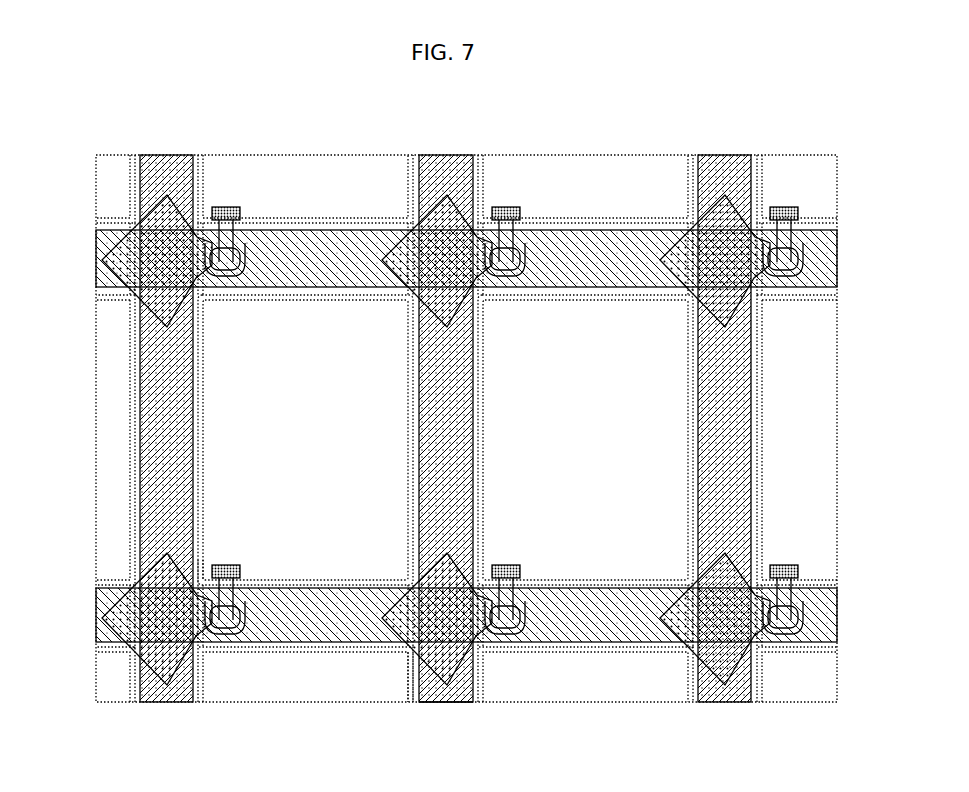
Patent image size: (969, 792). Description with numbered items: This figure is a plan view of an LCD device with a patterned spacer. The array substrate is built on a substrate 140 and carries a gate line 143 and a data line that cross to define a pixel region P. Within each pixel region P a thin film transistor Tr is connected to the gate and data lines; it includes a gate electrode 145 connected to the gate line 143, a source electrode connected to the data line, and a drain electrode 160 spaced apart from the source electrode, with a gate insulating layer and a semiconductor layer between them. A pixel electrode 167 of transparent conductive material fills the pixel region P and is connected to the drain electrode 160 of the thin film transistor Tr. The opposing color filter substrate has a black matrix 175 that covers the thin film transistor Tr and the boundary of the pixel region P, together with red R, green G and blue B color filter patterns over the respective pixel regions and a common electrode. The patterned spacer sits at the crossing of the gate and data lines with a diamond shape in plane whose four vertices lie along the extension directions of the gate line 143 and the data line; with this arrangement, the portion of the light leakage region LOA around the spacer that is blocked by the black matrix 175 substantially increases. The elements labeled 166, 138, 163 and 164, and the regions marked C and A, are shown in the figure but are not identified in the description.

The substrate 140 is at (378, 150).
The pixel region P is at (282, 316).
The red color filter pattern R is at (305, 440).
The green color filter pattern G is at (585, 440).
The blue color filter pattern B is at (797, 440).
The data line 166 is at (136, 407).
The black matrix 175 is at (420, 349).
The pixel electrode 167 is at (422, 368).
The light leakage region LOA is at (482, 555).
The gate line 143 is at (294, 652).
The semiconductor layer 138 is at (210, 655).
The gate electrode 145 is at (219, 655).
The drain electrode 160 is at (241, 652).
The contact hole 163 is at (204, 572).
The contact pad 164 is at (227, 566).
The thin film transistor Tr is at (190, 627).
The channel region C is at (426, 700).
The active layer A is at (452, 692).